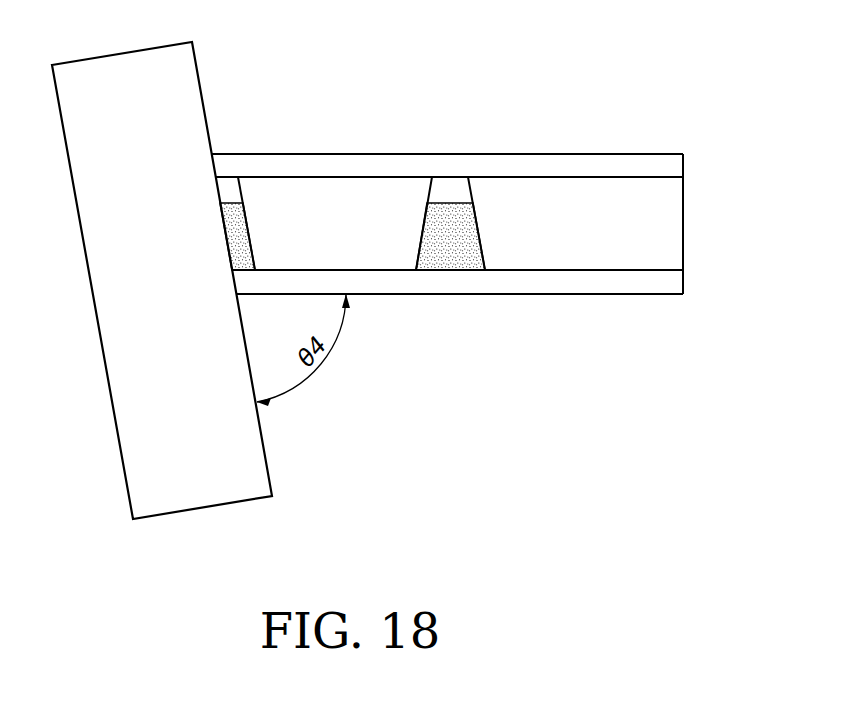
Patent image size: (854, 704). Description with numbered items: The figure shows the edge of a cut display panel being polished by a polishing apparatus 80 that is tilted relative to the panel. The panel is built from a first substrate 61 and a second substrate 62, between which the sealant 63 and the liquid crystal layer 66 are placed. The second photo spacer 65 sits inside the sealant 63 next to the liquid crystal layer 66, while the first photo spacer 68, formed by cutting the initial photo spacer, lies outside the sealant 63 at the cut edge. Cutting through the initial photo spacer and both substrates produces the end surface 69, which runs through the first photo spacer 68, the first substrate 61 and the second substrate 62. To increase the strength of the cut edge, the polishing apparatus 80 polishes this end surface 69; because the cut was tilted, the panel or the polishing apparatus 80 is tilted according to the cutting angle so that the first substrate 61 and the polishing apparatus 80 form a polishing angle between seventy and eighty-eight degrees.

The polishing apparatus 80 is at (178, 500).
The second substrate 62 is at (670, 168).
The first substrate 61 is at (670, 283).
The liquid crystal layer 66 is at (670, 228).
The sealant 63 is at (338, 202).
The second photo spacer 65 is at (450, 213).
The first photo spacer 68 is at (229, 204).
The end surface 69 is at (223, 238).